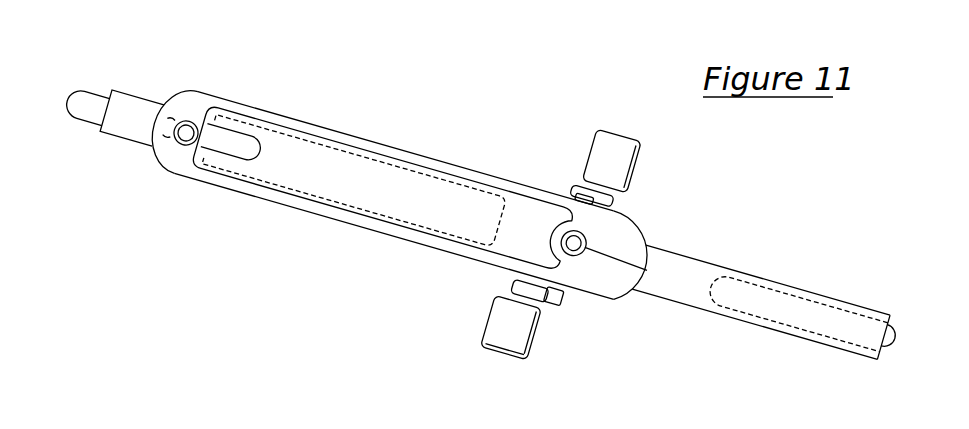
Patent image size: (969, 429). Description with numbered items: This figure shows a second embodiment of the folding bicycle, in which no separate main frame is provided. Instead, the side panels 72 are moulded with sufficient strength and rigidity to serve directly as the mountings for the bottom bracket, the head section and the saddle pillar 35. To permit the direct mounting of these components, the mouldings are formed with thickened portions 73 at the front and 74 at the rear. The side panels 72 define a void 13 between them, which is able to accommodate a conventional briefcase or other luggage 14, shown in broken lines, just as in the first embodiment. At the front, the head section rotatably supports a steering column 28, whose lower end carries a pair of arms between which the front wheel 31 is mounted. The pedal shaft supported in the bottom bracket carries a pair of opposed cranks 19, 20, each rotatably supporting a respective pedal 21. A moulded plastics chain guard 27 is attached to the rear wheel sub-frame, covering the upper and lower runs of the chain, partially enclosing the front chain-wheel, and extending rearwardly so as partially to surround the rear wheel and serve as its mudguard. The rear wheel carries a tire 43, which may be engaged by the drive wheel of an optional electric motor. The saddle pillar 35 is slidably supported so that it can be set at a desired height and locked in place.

The void 13 is at (405, 175).
The briefcase or other luggage 14 is at (300, 185).
The crank 19 is at (580, 192).
The crank 20 is at (522, 289).
The pedal 21 is at (615, 165).
The chain guard 27 is at (682, 263).
The steering column 28 is at (190, 125).
The front wheel 31 is at (92, 105).
The saddle pillar 35 is at (573, 257).
The tire 43 is at (837, 323).
The side panels 72 is at (367, 147).
The thickened portion 73 is at (177, 157).
The thickened portion 74 is at (605, 275).